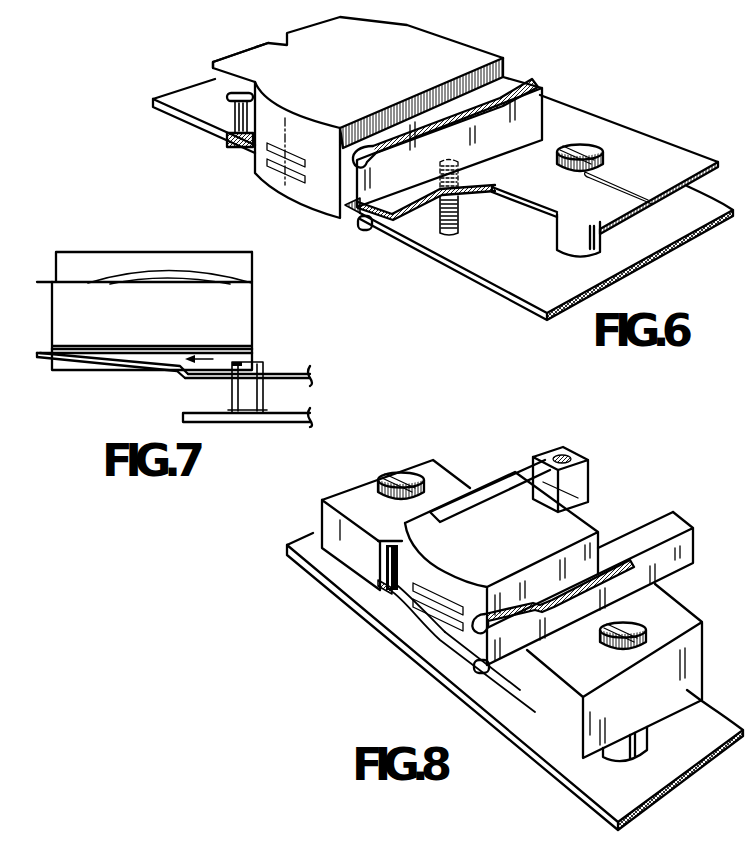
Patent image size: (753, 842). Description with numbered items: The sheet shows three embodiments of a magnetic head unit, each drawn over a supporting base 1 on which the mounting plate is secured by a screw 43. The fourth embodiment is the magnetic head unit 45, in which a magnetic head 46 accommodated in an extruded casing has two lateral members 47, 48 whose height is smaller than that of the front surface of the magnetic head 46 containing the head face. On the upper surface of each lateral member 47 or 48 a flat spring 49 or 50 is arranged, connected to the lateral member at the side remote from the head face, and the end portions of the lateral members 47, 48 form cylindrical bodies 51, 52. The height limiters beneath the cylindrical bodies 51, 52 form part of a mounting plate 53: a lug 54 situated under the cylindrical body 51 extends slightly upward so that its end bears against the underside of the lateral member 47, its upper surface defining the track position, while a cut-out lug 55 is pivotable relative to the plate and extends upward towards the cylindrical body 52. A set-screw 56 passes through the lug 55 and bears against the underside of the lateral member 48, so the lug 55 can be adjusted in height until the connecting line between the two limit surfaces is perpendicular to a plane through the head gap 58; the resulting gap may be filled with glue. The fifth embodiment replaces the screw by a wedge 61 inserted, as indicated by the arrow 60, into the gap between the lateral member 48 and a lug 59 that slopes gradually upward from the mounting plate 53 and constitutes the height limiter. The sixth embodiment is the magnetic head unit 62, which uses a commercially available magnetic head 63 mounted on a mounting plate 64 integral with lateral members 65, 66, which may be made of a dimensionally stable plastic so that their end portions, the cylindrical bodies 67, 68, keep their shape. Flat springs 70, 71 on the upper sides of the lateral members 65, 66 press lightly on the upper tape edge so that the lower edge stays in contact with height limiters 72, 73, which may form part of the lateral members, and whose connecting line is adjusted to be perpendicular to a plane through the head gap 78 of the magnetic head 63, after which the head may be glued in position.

In FIG. 6, the base plate 1 is at (512, 273).
In FIG. 7, the base plate 1 is at (308, 418).
In FIG. 8, the base plate 1 is at (660, 772).
In FIG. 6, the screw 43 is at (604, 152).
In FIG. 8, the screw 43 is at (393, 473).
In FIG. 6, the magnetic head unit 45 is at (492, 47).
In FIG. 7, the magnetic head unit 45 is at (258, 298).
In FIG. 6, the magnetic head 46 is at (455, 52).
In FIG. 7, the magnetic head 46 is at (78, 263).
In FIG. 6, the lateral member 47 is at (250, 92).
In FIG. 6, the lateral member 48 is at (487, 153).
In FIG. 7, the lateral member 48 is at (240, 313).
In FIG. 6, the flat spring 49 is at (232, 93).
In FIG. 6, the flat spring 50 is at (475, 95).
In FIG. 7, the flat spring 50 is at (163, 270).
In FIG. 6, the cylindrical body 51 is at (235, 115).
In FIG. 6, the cylindrical body 52 is at (393, 222).
In FIG. 6, the mounting plate 53 is at (590, 123).
In FIG. 7, the mounting plate 53 is at (312, 378).
In FIG. 6, the lug 54 is at (240, 147).
In FIG. 6, the cut-out lug 55 is at (402, 205).
In FIG. 6, the set-screw 56 is at (459, 218).
In FIG. 6, the head gap 58 is at (285, 182).
In FIG. 7, the lug 59 is at (63, 358).
In FIG. 7, the arrow 60 is at (270, 356).
In FIG. 7, the wedge 61 is at (118, 357).
In FIG. 8, the magnetic head unit 62 is at (604, 506).
In FIG. 8, the magnetic head 63 is at (513, 493).
In FIG. 8, the mounting plate 64 is at (677, 622).
In FIG. 8, the lateral member 65 is at (670, 563).
In FIG. 8, the lateral member 66 is at (580, 482).
In FIG. 8, the cylindrical body 67 is at (500, 643).
In FIG. 8, the cylindrical body 68 is at (386, 585).
In FIG. 8, the flat spring 70 is at (645, 535).
In FIG. 8, the flat spring 71 is at (543, 470).
In FIG. 8, the height limiter 72 is at (480, 687).
In FIG. 8, the height limiter 73 is at (392, 623).
In FIG. 8, the head gap 78 is at (413, 655).